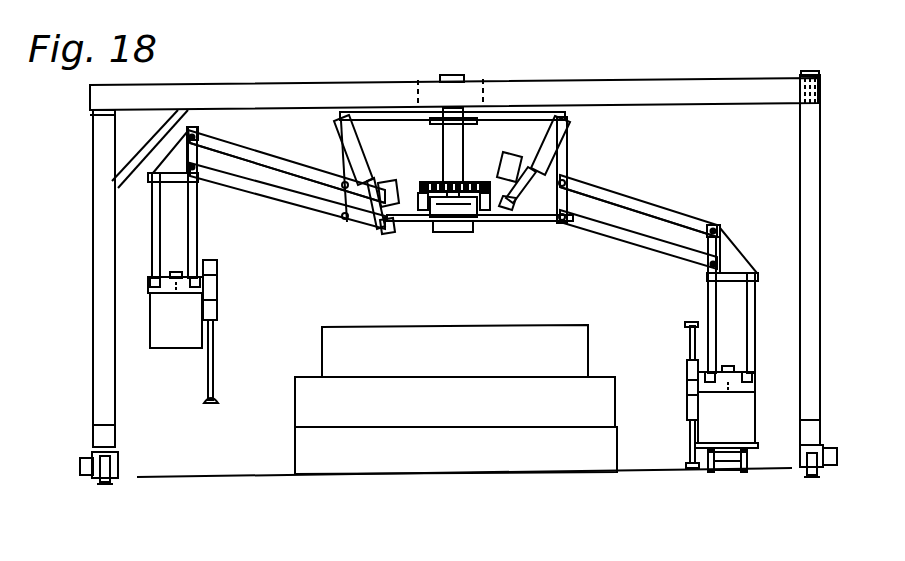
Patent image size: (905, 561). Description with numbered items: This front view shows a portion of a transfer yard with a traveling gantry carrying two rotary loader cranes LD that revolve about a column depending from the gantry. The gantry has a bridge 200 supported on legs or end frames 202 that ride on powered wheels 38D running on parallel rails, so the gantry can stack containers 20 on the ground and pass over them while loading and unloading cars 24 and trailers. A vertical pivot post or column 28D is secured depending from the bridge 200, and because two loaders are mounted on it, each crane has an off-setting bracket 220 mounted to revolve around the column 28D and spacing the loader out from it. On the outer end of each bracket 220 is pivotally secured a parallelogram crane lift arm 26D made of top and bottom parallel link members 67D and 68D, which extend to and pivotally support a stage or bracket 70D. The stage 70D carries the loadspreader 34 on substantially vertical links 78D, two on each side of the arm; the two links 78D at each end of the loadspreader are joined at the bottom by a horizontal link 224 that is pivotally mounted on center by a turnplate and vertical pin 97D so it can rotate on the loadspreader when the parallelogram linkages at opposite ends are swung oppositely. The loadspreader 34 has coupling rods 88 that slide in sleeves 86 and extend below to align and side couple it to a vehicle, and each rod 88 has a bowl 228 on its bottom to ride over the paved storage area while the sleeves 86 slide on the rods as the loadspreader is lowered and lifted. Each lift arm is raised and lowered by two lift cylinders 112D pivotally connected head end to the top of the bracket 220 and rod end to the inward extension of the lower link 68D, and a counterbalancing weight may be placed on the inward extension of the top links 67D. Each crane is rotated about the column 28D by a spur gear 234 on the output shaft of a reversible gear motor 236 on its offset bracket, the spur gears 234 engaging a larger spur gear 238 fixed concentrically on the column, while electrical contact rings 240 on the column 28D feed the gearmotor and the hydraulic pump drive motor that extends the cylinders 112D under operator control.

The bridge 200 is at (213, 86).
The legs or end frames 202 is at (95, 392).
The powered wheels 38D is at (115, 482).
The off-setting bracket 220 is at (393, 112).
The lift cylinders 112D is at (352, 162).
The parallelogram crane lift arm 26D is at (212, 144).
The top link member 67D is at (252, 158).
The bottom link member 68D is at (318, 208).
The vertical links 78D is at (190, 244).
The stage or bracket 70D is at (205, 180).
The turnplate and vertical pin 97D is at (178, 279).
The horizontal link 224 is at (150, 282).
The loadspreader 34 is at (756, 392).
The containers 20 is at (188, 350).
The sleeves 86 is at (220, 310).
The coupling rods 88 is at (215, 358).
The bowl 228 is at (213, 405).
The cars 24 is at (725, 470).
The larger spur gear 238 is at (432, 182).
The spur gear 234 is at (420, 192).
The reversible gear motor 236 is at (412, 223).
The electrical contact rings 240 is at (450, 233).
The vertical pivot post or column 28D is at (455, 233).
The cranes LD is at (258, 246).